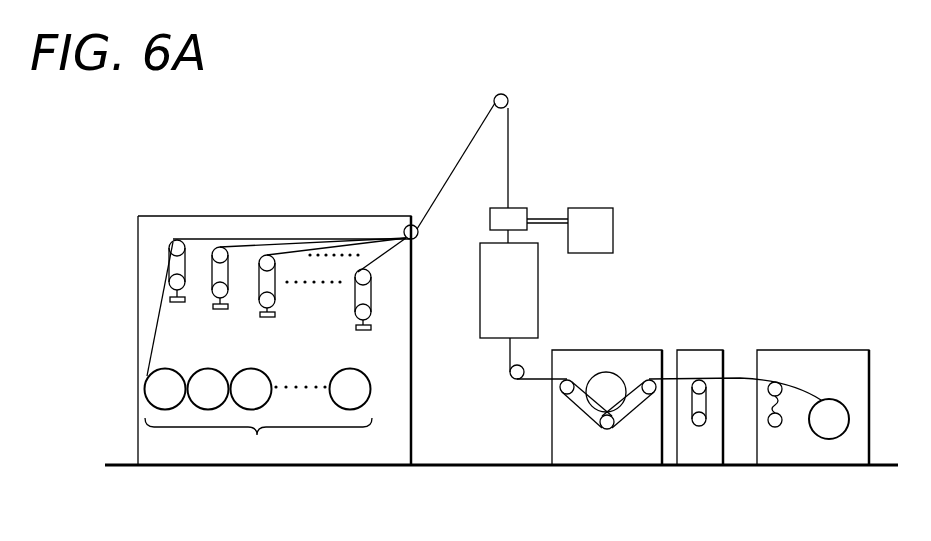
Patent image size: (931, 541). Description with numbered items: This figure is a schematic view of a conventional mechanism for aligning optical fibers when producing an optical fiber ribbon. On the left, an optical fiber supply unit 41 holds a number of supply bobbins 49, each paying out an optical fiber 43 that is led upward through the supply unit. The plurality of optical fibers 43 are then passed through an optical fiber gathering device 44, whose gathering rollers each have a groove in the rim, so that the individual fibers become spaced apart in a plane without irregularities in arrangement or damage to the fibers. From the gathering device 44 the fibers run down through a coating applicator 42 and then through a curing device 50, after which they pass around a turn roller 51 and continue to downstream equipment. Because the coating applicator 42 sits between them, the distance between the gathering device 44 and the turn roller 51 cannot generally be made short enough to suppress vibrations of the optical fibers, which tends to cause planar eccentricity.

The optical fiber supply unit 41 is at (267, 215).
The coating applicator 42 is at (515, 207).
The optical fiber 43 is at (148, 340).
The optical fiber gathering device 44 is at (508, 99).
The supply bobbin 49 is at (342, 397).
The curing device 50 is at (538, 283).
The turn roller 51 is at (512, 378).